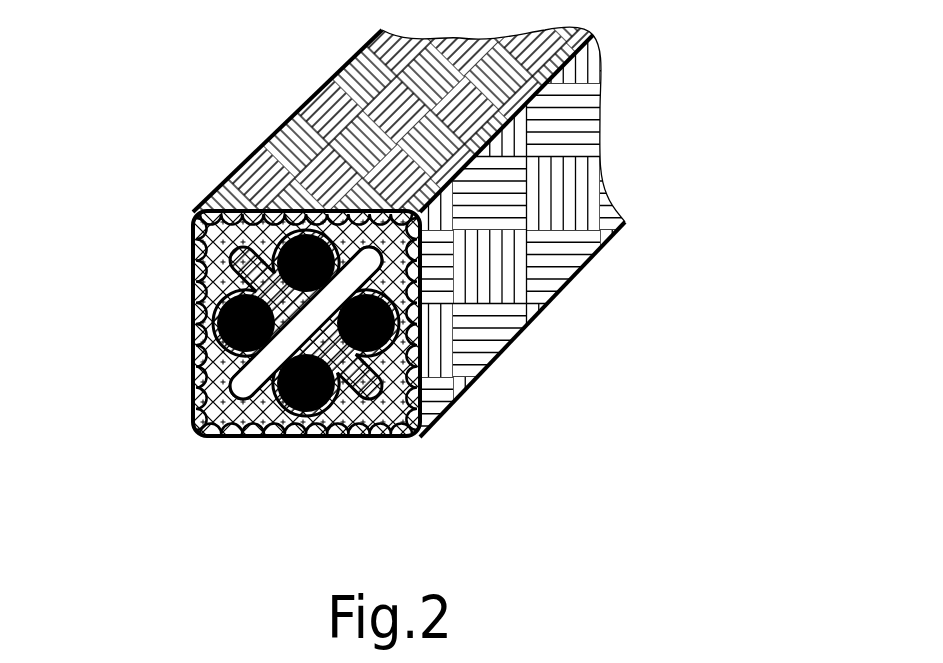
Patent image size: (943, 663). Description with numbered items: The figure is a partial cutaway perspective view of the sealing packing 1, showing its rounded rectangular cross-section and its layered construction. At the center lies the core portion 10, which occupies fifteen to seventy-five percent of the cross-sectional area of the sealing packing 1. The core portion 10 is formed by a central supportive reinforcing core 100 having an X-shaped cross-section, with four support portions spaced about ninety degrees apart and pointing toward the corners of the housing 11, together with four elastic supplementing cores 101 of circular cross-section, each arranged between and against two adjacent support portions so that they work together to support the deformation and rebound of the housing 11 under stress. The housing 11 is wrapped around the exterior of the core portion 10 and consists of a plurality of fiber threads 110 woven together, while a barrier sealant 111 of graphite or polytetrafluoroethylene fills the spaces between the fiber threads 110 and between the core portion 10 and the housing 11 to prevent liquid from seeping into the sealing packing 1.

The sealing packing 1 is at (322, 286).
The housing 11 is at (488, 292).
The fiber threads 110 is at (245, 163).
The core portion 10 is at (220, 346).
The central supportive reinforcing core 100 is at (192, 250).
The barrier sealant 111 is at (192, 360).
The elastic supplementing core 101 is at (333, 437).